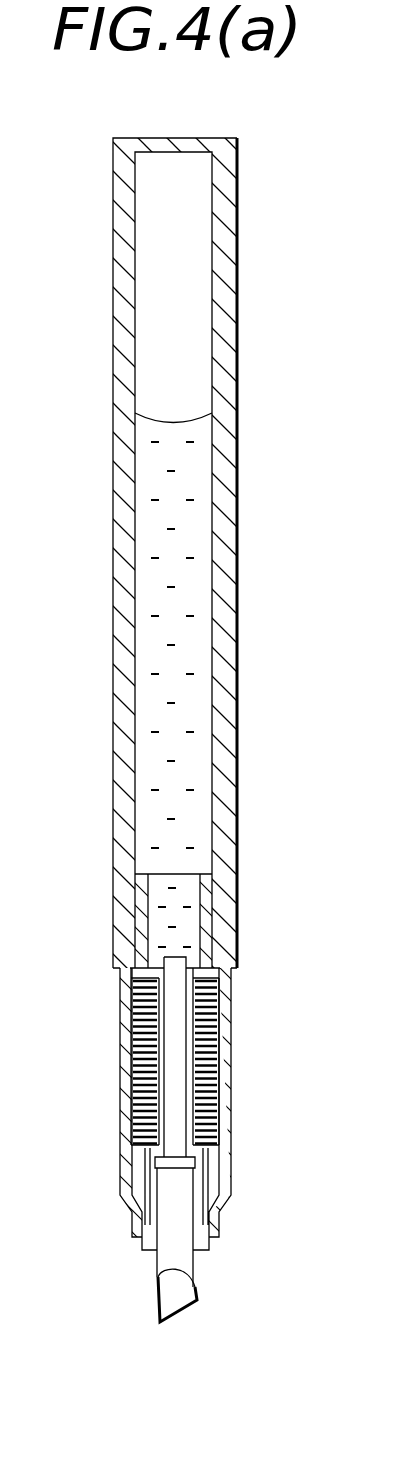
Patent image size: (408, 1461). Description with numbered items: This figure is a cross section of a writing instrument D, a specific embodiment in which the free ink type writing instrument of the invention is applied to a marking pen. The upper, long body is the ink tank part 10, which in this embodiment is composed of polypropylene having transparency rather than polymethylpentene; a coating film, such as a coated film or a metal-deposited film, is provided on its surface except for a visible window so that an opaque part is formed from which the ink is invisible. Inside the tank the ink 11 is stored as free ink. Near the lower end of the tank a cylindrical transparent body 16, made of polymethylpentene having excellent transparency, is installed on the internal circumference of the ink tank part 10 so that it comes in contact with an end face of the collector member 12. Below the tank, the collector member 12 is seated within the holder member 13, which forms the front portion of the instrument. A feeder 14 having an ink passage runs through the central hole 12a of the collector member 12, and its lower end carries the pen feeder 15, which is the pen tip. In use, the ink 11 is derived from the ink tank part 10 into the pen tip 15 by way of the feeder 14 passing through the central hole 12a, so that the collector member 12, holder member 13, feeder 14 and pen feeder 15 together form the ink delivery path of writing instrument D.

The writing instrument D is at (248, 352).
The ink tank part 10 is at (226, 522).
The ink 11 is at (193, 678).
The collector member 12 is at (138, 1012).
The central hole 12a is at (187, 1100).
The holder member 13 is at (218, 1170).
The feeder 14 is at (177, 1030).
The pen feeder 15 is at (160, 1278).
The cylindrical transparent body 16 is at (215, 908).